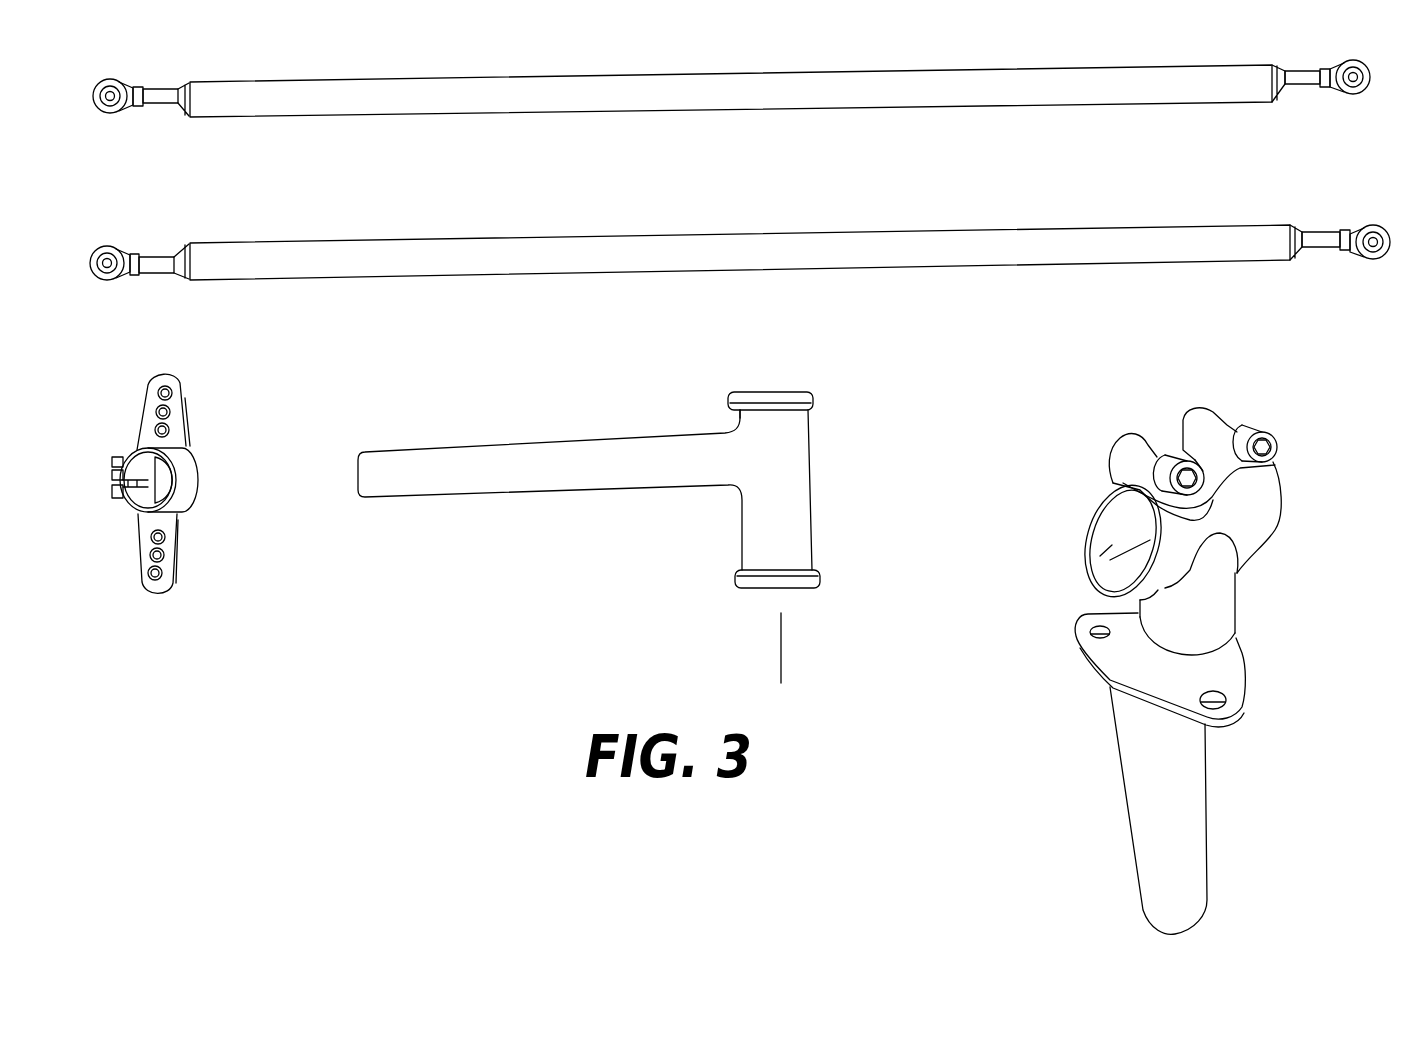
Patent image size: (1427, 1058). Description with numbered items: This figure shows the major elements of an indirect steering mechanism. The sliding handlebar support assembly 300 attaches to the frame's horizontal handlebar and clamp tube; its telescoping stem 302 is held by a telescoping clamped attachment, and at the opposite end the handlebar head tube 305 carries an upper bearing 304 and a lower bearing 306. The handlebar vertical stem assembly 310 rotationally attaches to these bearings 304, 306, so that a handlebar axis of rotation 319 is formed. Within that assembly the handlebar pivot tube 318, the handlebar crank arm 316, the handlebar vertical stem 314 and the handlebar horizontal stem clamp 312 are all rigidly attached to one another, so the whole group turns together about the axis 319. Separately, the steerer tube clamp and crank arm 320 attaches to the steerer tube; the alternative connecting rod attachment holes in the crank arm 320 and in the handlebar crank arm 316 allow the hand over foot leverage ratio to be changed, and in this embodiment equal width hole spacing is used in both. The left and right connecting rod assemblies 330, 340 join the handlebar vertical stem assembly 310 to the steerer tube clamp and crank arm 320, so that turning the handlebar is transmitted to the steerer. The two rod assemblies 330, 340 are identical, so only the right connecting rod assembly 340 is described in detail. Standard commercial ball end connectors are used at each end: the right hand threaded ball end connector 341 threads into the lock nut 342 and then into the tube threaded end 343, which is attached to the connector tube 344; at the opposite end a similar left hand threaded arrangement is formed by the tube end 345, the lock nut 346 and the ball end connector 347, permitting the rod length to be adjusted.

The sliding handlebar support assembly 300 is at (637, 524).
The telescoping stem 302 is at (418, 497).
The upper bearing 304 is at (813, 398).
The handlebar head tube 305 is at (813, 487).
The lower bearing 306 is at (820, 578).
The handlebar vertical stem assembly 310 is at (1166, 640).
The handlebar horizontal stem clamp 312 is at (1125, 445).
The handlebar vertical stem 314 is at (1236, 605).
The handlebar crank arm 316 is at (1240, 712).
The handlebar pivot tube 318 is at (1205, 825).
The handlebar axis of rotation 319 is at (781, 640).
The steerer tube clamp and crank arm 320 is at (200, 462).
The left connecting rod assembly 330 is at (510, 130).
The right connecting rod assembly 340 is at (734, 211).
The right hand threaded ball end connector 341 is at (1355, 229).
The lock nut 342 is at (1336, 233).
The tube threaded end 343 is at (1305, 235).
The connector tube 344 is at (1047, 229).
The left hand threaded tube end 345 is at (180, 246).
The left hand lock nut 346 is at (140, 246).
The left hand threaded ball end connector 347 is at (113, 247).